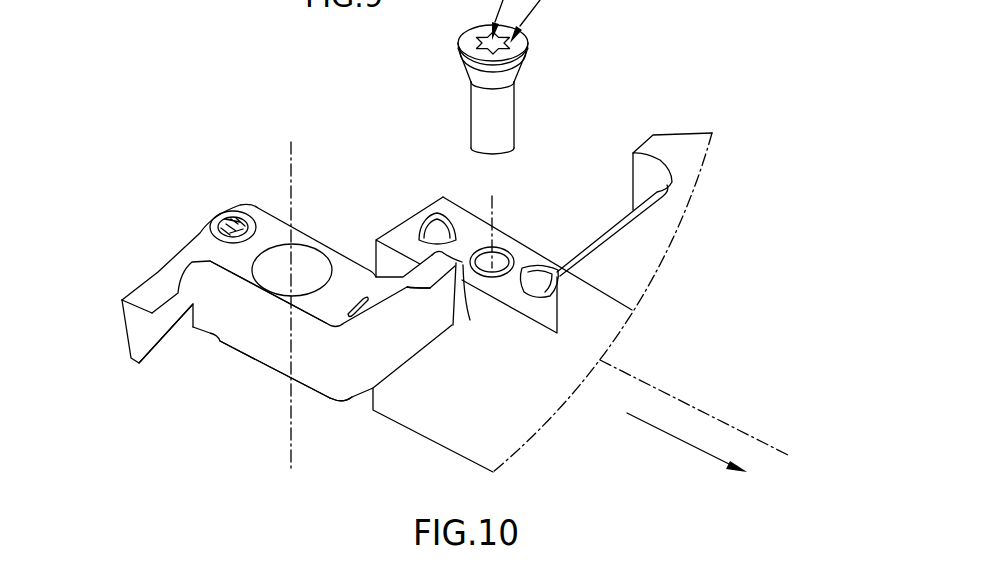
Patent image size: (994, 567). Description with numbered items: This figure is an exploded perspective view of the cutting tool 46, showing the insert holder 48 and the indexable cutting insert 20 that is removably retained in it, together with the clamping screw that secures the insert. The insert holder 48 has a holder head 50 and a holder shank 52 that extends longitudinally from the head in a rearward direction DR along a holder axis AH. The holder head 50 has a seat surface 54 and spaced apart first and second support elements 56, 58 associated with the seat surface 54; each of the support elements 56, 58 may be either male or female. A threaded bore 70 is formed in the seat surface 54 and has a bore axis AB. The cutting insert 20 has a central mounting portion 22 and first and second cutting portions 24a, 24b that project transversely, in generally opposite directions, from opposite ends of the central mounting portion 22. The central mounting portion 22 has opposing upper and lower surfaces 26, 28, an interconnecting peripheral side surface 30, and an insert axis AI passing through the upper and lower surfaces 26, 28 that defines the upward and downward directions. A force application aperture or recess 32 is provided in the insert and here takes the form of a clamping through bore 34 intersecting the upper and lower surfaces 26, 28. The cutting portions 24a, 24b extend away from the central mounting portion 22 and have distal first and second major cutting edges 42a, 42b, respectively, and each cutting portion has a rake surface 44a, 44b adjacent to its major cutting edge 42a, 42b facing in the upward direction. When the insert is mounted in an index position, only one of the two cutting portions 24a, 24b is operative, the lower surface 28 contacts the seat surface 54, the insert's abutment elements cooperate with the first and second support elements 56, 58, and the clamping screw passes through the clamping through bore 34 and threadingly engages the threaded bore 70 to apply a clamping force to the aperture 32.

The indexable cutting insert 20 is at (187, 225).
The central mounting portion 22 is at (268, 298).
The first cutting portion 24a is at (178, 333).
The second cutting portion 24b is at (428, 304).
The upper surface 26 is at (266, 215).
The lower surface 28 is at (328, 413).
The peripheral side surface 30 is at (297, 369).
The force application aperture or recess 32 is at (297, 243).
The clamping through bore 34 is at (311, 247).
The first major cutting edge 42a is at (128, 305).
The second major cutting edge 42b is at (471, 297).
The first rake surface 44a is at (140, 294).
The second rake surface 44b is at (380, 240).
The cutting tool 46 is at (543, 117).
The insert holder 48 is at (530, 415).
The holder head 50 is at (438, 396).
The holder shank 52 is at (652, 272).
The seat surface 54 is at (467, 200).
The first support element 56 is at (548, 255).
The second support element 58 is at (432, 199).
The threaded bore 70 is at (506, 246).
The insert axis AI is at (291, 308).
The bore axis AB is at (495, 221).
The holder axis AH is at (712, 417).
The rearward direction DR is at (700, 451).